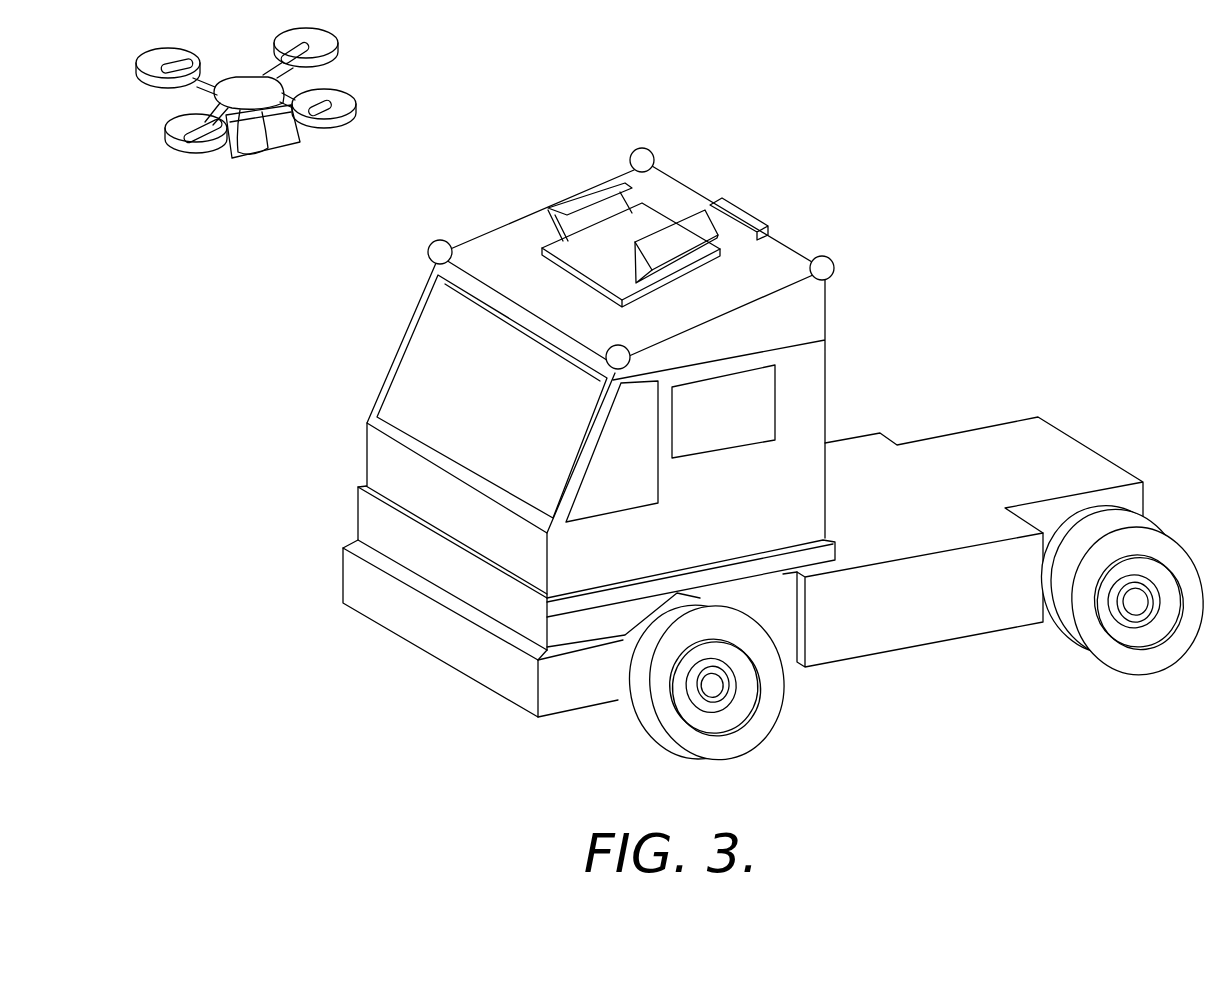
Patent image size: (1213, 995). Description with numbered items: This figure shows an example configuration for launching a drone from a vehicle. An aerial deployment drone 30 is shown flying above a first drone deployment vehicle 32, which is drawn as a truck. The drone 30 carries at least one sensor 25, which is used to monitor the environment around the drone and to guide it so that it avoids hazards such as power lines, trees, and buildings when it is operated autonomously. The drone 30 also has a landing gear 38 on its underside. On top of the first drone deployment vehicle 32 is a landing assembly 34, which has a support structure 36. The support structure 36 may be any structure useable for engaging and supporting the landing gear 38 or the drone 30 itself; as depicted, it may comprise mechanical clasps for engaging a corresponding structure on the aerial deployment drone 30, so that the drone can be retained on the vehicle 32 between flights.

The aerial deployment drone 30 is at (336, 96).
The sensor 25 is at (248, 151).
The landing gear 38 is at (264, 153).
The first drone deployment vehicle 32 is at (969, 205).
The landing assembly 34 is at (598, 259).
The support structure 36 is at (687, 238).